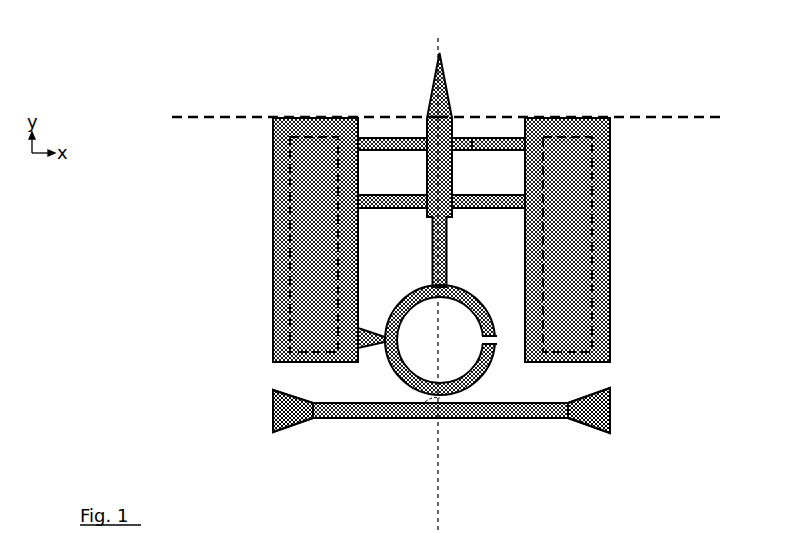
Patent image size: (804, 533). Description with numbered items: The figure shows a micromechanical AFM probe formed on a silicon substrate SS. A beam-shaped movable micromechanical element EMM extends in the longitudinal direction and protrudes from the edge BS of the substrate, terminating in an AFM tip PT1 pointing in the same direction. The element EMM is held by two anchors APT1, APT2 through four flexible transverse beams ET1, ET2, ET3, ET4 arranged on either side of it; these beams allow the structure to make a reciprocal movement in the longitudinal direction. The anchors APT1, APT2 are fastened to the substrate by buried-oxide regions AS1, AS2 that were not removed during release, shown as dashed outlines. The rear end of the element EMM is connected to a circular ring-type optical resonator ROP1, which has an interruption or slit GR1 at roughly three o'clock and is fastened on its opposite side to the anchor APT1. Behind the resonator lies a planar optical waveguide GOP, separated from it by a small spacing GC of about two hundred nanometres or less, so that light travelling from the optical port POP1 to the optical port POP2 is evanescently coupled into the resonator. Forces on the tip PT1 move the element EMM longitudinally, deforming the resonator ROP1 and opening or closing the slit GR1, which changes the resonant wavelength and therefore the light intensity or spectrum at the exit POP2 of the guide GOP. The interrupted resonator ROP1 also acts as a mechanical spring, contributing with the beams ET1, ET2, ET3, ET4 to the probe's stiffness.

The anchor APT1 is at (268, 118).
The anchor APT2 is at (640, 117).
The first absorber section AS1 is at (273, 200).
The second absorber section AS2 is at (610, 182).
The edge of the substrate BS is at (610, 163).
The silicon substrate SS is at (662, 155).
The beam ET1 is at (408, 138).
The beam ET2 is at (497, 138).
The beam ET3 is at (397, 196).
The beam ET4 is at (483, 196).
The AFM tip PT1 is at (470, 138).
The movable micromechanical element EMM is at (447, 95).
The optical resonator ROP1 is at (483, 305).
The interruption GR1 is at (483, 343).
The planar optical waveguide GOP is at (312, 420).
The optical port POP1 is at (270, 401).
The optical port POP2 is at (610, 392).
The spacing GC is at (400, 420).